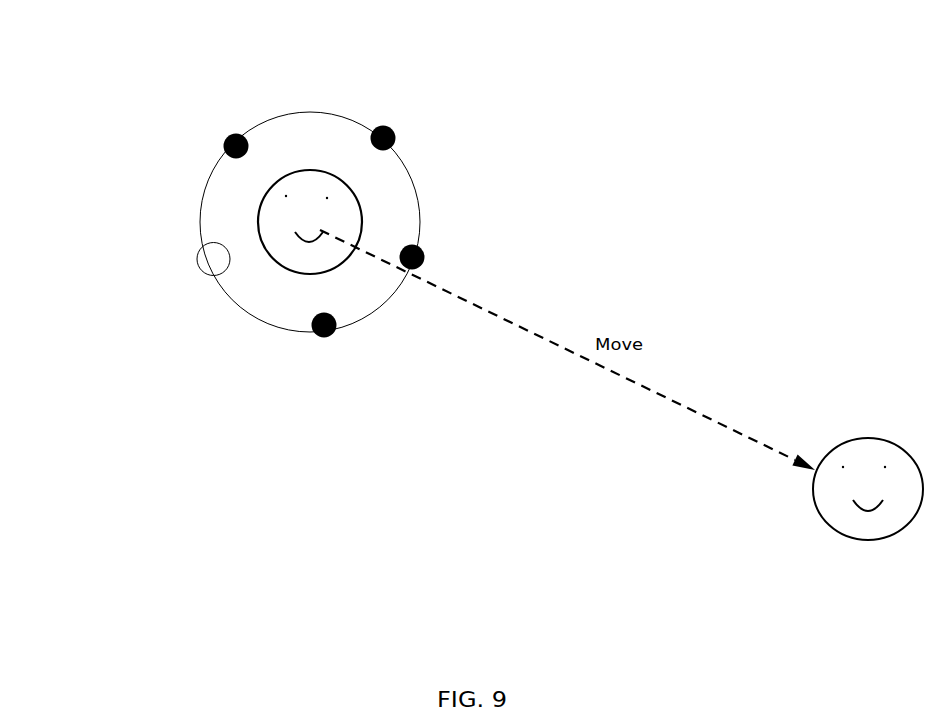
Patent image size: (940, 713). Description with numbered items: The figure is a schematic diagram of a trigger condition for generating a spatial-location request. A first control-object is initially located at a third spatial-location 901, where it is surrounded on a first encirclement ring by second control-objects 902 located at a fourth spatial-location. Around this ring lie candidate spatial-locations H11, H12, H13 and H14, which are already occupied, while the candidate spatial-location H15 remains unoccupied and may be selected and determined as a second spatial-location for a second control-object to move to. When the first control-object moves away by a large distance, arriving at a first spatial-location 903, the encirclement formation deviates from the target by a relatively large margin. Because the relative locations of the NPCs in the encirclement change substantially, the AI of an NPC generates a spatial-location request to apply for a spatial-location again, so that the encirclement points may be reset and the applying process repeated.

The third spatial-location 901 is at (320, 230).
The second control-objects 902 is at (411, 185).
The first spatial-location 903 is at (923, 633).
The candidate spatial-location H11 is at (260, 145).
The candidate spatial-location H12 is at (373, 154).
The candidate spatial-location H13 is at (399, 243).
The candidate spatial-location H14 is at (349, 330).
The unoccupied candidate spatial-location H15 is at (235, 262).